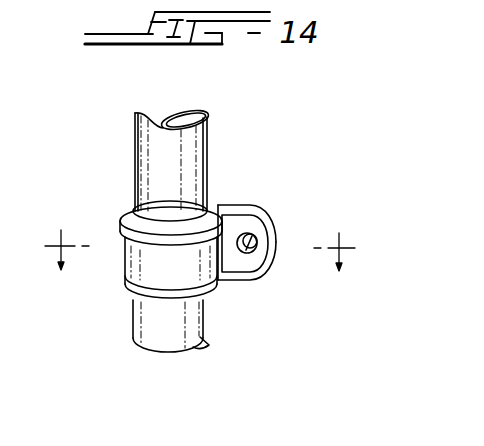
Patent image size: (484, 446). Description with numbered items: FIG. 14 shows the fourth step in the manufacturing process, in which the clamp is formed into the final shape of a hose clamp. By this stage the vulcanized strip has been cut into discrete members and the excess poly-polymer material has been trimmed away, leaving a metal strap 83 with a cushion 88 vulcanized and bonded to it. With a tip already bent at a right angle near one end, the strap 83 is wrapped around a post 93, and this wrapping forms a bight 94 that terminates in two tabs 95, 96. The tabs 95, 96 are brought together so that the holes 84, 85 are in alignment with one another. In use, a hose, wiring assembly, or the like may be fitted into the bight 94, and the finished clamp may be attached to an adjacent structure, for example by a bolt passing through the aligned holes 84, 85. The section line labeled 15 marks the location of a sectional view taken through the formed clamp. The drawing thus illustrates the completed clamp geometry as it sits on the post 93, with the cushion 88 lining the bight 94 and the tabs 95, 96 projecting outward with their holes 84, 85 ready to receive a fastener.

The section line 15- 15 is at (197, 247).
The strap 83 is at (127, 272).
The hole 84 is at (257, 247).
The hole 85 is at (258, 236).
The cushion 88 is at (132, 211).
The post 93 is at (207, 161).
The bight 94 is at (137, 297).
The tab 95 is at (246, 204).
The tab 96 is at (262, 273).